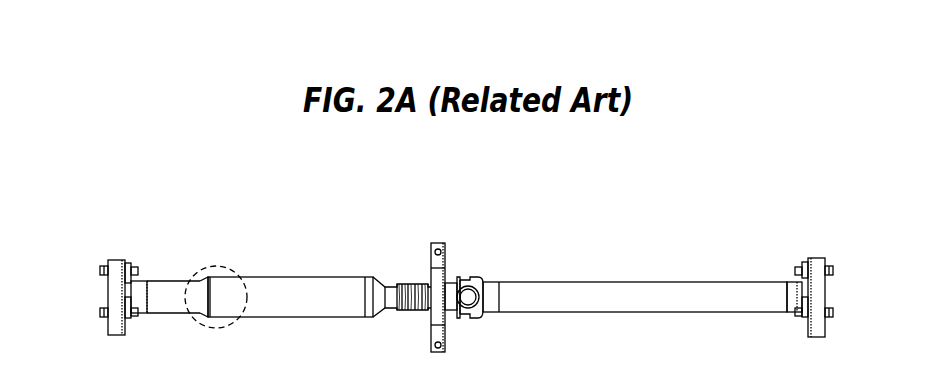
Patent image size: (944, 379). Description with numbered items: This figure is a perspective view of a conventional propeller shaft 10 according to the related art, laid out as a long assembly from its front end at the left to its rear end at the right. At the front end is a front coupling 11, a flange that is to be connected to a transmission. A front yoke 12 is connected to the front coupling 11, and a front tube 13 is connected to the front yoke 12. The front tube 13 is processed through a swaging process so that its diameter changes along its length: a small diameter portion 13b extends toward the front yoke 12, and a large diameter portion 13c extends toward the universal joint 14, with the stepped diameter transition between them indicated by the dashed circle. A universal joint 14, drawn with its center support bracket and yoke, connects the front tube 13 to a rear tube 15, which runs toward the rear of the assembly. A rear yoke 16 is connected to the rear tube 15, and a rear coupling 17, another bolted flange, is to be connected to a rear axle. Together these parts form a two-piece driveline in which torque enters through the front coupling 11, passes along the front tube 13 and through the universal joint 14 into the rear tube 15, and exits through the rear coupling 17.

The propeller shaft 10 is at (364, 215).
The front coupling 11 is at (116, 258).
The front yoke 12 is at (143, 280).
The front tube 13 is at (250, 268).
The small diameter portion 13b is at (178, 315).
The large diameter portion 13c is at (297, 279).
The universal joint 14 is at (468, 277).
The rear tube 15 is at (601, 281).
The rear yoke 16 is at (791, 281).
The rear coupling 17 is at (817, 257).